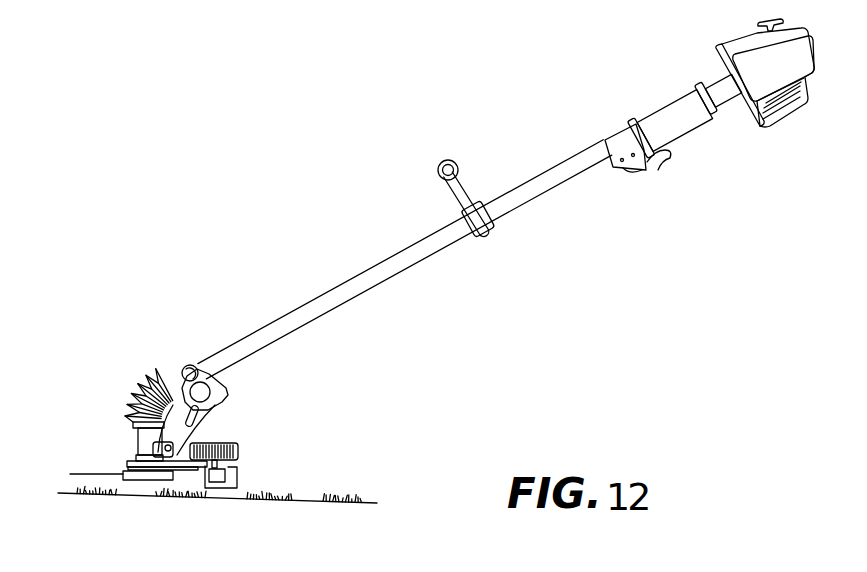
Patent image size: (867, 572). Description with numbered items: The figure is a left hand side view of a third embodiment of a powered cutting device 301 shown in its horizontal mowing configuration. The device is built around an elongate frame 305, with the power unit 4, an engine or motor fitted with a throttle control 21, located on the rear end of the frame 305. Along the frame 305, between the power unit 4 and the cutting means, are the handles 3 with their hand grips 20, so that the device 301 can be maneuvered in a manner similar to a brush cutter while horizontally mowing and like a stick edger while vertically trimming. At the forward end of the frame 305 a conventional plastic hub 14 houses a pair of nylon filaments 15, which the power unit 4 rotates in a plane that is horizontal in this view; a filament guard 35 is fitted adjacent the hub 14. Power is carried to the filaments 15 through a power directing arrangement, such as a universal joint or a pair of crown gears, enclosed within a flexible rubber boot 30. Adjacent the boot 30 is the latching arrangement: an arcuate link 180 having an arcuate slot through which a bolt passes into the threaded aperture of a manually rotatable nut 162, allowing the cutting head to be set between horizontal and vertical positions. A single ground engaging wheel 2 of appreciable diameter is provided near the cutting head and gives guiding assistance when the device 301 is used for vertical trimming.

The powered cutting device 301 is at (277, 222).
The elongate frame 305 is at (445, 242).
The handles 3 is at (463, 193).
The hand grips 20 is at (455, 159).
The throttle control 21 is at (660, 160).
The power unit 4 is at (790, 50).
The flexible rubber boot 30 is at (150, 382).
The manually rotatable nut 162 is at (220, 398).
The arcuate link 180 is at (218, 414).
The ground engaging wheel 2 is at (242, 446).
The filament guard 35 is at (238, 474).
The plastic hub 14 is at (138, 475).
The nylon filaments 15 is at (83, 473).